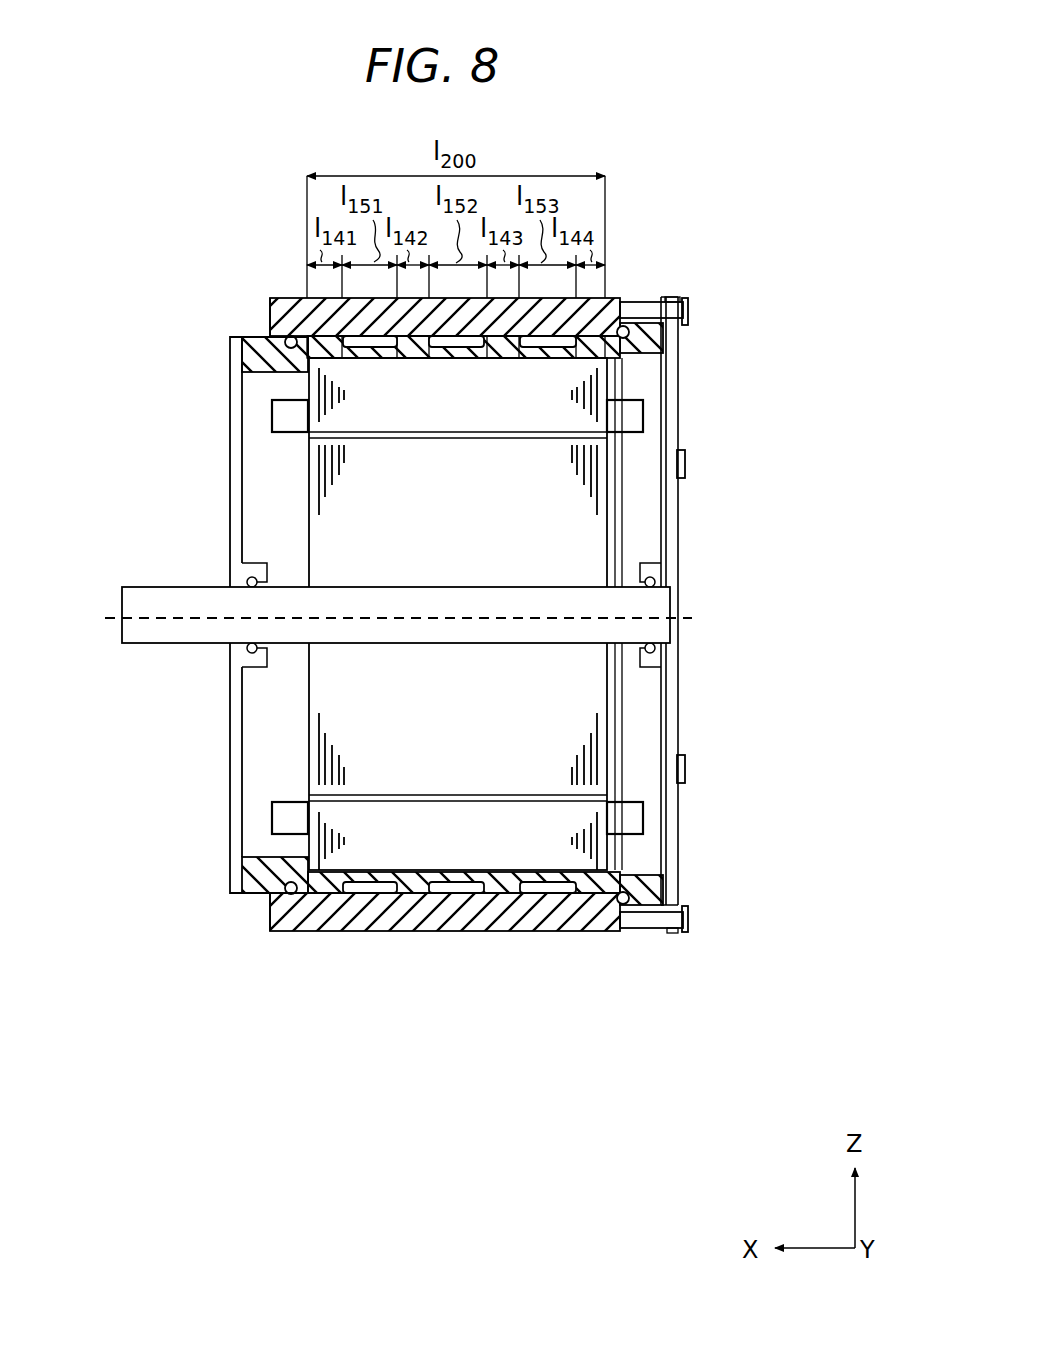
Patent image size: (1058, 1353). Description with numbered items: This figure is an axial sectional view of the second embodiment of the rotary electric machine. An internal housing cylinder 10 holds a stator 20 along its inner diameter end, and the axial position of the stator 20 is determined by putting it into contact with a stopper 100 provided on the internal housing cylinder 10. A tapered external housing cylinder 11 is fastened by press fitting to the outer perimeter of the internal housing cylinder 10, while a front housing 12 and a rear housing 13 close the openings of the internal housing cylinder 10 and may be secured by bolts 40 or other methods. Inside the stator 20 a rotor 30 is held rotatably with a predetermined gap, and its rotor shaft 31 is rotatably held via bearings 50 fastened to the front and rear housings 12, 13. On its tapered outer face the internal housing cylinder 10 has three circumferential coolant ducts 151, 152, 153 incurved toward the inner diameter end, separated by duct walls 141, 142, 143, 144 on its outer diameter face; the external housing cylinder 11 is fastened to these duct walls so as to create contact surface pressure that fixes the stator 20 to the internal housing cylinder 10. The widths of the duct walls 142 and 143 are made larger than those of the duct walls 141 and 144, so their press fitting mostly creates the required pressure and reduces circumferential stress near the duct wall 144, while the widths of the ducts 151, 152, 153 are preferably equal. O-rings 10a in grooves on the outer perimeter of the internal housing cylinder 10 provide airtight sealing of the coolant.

The internal housing cylinder 10 is at (245, 888).
The O-rings 10a is at (288, 933).
The external housing cylinder 11 is at (284, 298).
The front housing 12 is at (228, 440).
The rear housing 13 is at (672, 543).
The stator 20 is at (383, 837).
The rotor 30 is at (553, 726).
The rotor shaft 31 is at (138, 632).
The bolt 40 is at (683, 297).
The bearings 50 is at (250, 578).
The stopper 100 is at (290, 882).
The duct wall 141 is at (345, 893).
The duct wall 142 is at (420, 895).
The duct wall 143 is at (503, 895).
The duct wall 144 is at (597, 895).
The circumferential coolant duct 151 is at (375, 893).
The circumferential coolant duct 152 is at (460, 893).
The circumferential coolant duct 153 is at (555, 890).